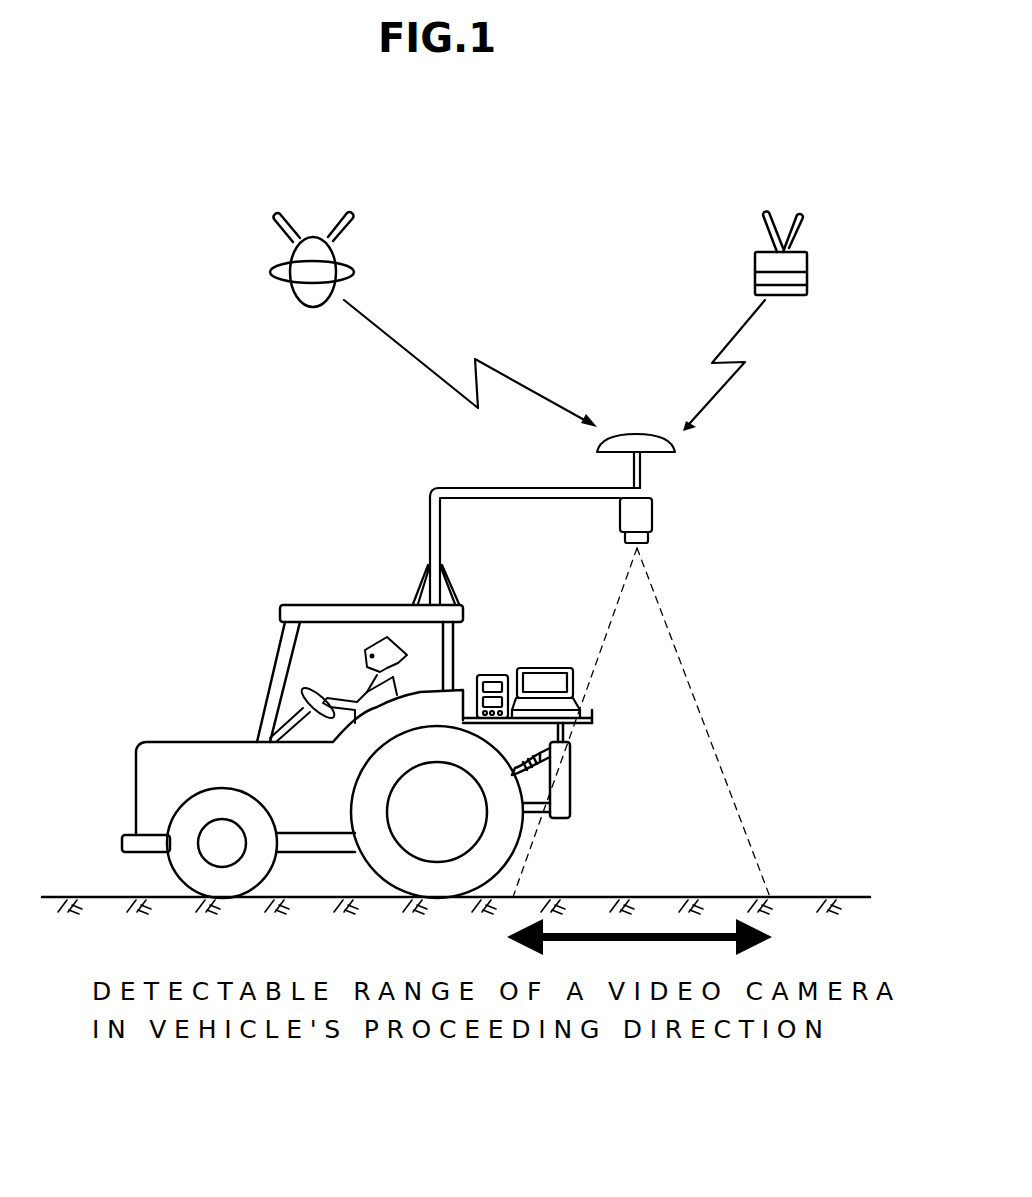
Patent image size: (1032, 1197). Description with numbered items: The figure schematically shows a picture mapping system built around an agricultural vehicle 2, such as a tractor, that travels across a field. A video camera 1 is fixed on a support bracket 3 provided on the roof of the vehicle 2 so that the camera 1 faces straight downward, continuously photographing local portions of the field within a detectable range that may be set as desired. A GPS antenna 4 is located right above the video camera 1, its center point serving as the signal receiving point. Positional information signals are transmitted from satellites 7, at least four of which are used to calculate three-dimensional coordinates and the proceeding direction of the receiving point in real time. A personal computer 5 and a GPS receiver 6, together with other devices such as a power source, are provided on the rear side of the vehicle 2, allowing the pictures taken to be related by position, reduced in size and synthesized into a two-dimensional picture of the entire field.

The video camera 1 is at (653, 515).
The agricultural vehicle 2 is at (178, 742).
The support bracket 3 is at (428, 527).
The GPS antenna 4 is at (668, 452).
The personal computer 5 is at (574, 685).
The GPS receiver 6 is at (496, 674).
The satellites 7 is at (270, 272).